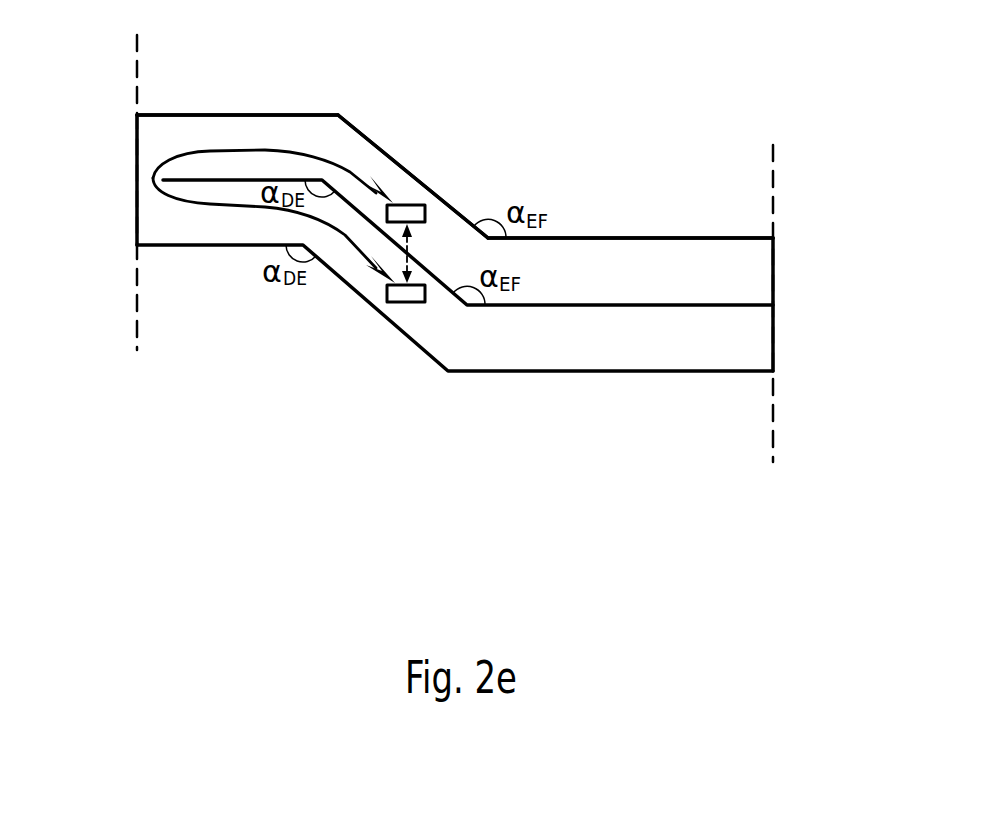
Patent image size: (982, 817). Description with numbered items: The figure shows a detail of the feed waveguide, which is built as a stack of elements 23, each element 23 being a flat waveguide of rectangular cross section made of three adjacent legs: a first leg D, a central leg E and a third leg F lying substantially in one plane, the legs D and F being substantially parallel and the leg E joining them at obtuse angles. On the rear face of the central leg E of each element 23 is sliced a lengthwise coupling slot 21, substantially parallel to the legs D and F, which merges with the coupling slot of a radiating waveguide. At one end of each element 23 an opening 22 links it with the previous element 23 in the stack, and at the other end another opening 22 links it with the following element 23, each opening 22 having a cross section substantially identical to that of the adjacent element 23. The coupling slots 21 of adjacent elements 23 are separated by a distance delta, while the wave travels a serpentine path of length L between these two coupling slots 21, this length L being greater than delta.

The coupling slot 21 is at (407, 204).
The opening 22 is at (147, 178).
The element 23 is at (197, 133).
The first leg D is at (267, 115).
The central leg E is at (452, 208).
The third leg F is at (620, 237).
The length traversed by the wave L is at (274, 216).
The distance between two coupling slots delta is at (416, 253).